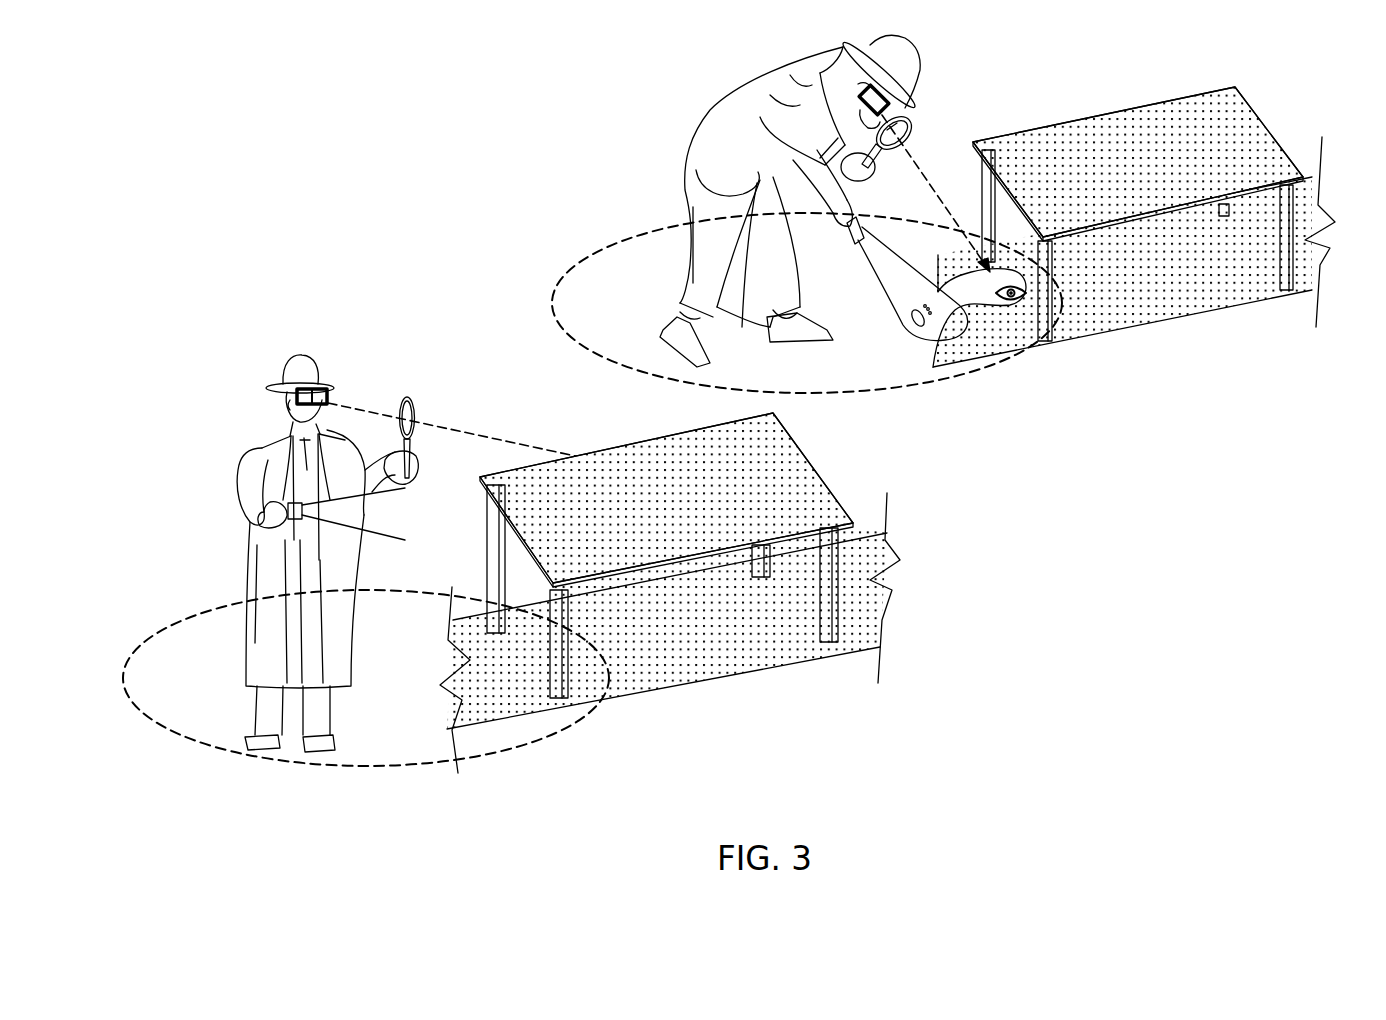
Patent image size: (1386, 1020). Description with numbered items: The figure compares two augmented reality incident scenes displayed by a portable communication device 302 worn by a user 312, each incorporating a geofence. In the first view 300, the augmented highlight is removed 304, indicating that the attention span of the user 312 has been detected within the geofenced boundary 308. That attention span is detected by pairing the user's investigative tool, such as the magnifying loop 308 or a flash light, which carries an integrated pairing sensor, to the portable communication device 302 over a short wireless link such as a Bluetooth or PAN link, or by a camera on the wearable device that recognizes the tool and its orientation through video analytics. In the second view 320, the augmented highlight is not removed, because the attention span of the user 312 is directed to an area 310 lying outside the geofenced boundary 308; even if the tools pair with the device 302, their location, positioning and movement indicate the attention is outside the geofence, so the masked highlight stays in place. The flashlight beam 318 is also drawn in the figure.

The augmented reality incident scene view 300 is at (1126, 89).
The portable communication device 302 is at (862, 90).
The removed augmented highlight 304 is at (413, 400).
The geofenced boundary 308 is at (917, 120).
The area outside geofenced boundary 310 is at (1186, 474).
The user 312 is at (718, 110).
The flashlight beam / pointing gesture 318 is at (863, 217).
The augmented reality incident scene view 320 is at (213, 402).